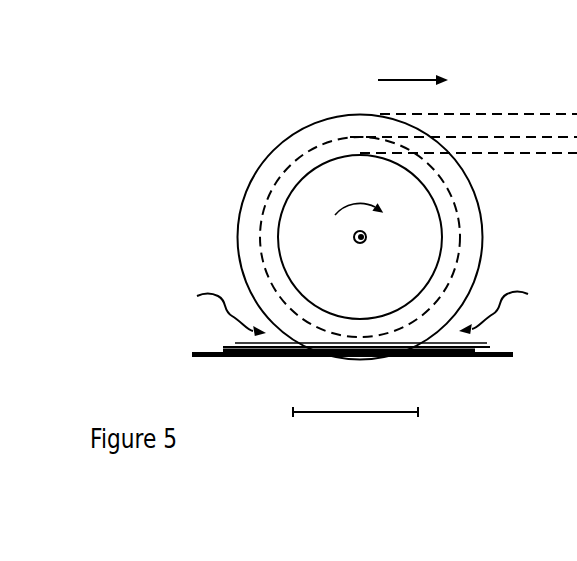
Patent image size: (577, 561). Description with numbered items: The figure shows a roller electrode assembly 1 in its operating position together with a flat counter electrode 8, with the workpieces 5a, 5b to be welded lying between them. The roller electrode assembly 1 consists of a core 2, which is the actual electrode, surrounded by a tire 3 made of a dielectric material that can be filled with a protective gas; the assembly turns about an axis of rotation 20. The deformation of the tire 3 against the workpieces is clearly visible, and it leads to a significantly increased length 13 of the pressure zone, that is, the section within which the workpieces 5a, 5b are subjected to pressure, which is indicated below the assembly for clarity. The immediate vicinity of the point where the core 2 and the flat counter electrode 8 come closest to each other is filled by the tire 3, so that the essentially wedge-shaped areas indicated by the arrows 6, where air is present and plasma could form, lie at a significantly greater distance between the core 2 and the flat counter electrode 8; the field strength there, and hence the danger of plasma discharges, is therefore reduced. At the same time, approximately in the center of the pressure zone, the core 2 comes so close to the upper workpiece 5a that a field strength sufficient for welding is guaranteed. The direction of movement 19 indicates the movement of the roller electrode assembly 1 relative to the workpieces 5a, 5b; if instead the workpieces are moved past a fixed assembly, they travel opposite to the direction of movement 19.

The roller electrode assembly 1 is at (246, 117).
The core 2 is at (392, 282).
The tire 3 is at (334, 132).
The workpiece 5a is at (492, 345).
The workpiece 5b is at (222, 345).
The arrows 6 is at (217, 295).
The flat counter electrode 8 is at (510, 359).
The length of the pressure zone 13 is at (332, 413).
The direction of movement 19 is at (413, 77).
The axis of rotation 20 is at (358, 236).